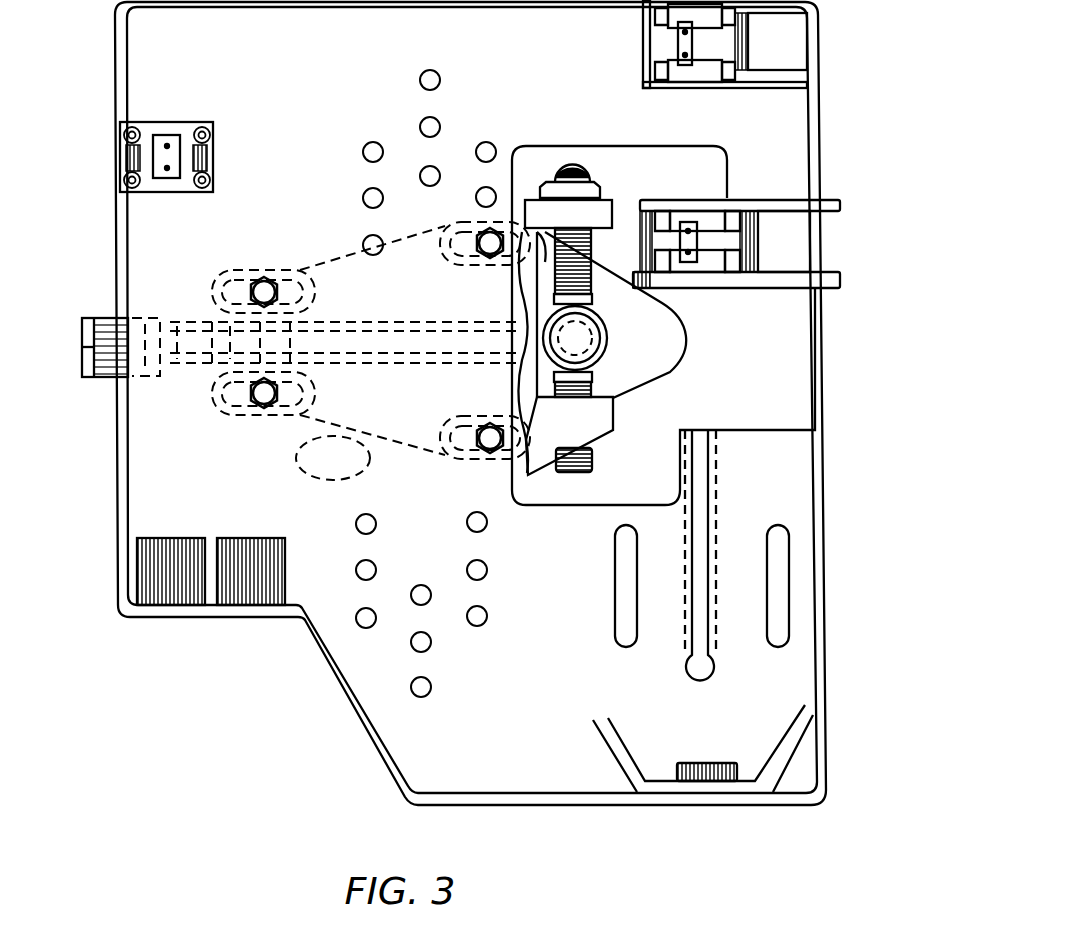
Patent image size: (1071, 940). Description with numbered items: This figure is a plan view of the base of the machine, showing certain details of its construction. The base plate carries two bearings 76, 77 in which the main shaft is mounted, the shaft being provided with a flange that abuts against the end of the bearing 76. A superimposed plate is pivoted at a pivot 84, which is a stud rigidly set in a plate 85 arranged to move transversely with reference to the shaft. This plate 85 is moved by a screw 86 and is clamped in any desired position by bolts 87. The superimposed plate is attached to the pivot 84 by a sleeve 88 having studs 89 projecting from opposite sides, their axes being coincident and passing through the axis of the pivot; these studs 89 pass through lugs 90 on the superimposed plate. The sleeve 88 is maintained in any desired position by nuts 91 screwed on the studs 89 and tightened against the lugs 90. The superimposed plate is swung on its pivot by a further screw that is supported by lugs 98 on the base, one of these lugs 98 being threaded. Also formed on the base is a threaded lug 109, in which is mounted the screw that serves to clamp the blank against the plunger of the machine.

The bearing 76 is at (745, 262).
The bearing 77 is at (630, 40).
The pivot 84 is at (583, 347).
The plate 85 is at (333, 458).
The screw 86 is at (90, 375).
The bolts 87 is at (270, 402).
The sleeve 88 is at (607, 333).
The studs 89 is at (588, 170).
The lugs 90 is at (603, 213).
The nuts 91 is at (545, 183).
The lugs 98 is at (213, 152).
The threaded lug 109 is at (703, 772).